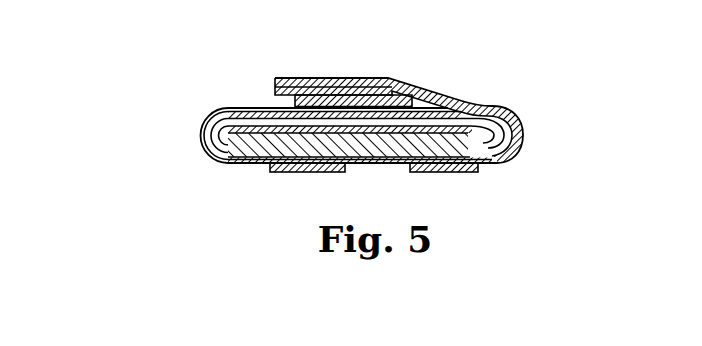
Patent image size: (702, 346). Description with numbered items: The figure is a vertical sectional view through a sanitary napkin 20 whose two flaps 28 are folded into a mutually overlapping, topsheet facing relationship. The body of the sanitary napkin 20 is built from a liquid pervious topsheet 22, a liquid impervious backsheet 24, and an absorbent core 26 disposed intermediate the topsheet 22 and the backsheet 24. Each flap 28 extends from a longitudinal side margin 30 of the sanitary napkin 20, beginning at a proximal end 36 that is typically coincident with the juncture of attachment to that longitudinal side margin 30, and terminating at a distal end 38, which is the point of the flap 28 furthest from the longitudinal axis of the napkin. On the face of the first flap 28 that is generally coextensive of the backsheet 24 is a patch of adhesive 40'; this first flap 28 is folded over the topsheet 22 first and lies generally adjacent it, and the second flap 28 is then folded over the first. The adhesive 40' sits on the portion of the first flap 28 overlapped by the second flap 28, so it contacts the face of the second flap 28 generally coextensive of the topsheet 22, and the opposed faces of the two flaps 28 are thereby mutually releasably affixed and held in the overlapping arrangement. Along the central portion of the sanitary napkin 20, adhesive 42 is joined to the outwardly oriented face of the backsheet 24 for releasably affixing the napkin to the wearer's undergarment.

The sanitary napkin 20 is at (321, 121).
The liquid pervious topsheet 22 is at (473, 110).
The liquid impervious backsheet 24 is at (260, 163).
The absorbent core 26 is at (363, 147).
The flap 28 is at (223, 110).
The longitudinal side margin 30 is at (200, 137).
The proximal end 36 is at (200, 127).
The distal end 38 is at (288, 79).
The adhesive patch 40' is at (353, 69).
The adhesive 42 is at (303, 175).